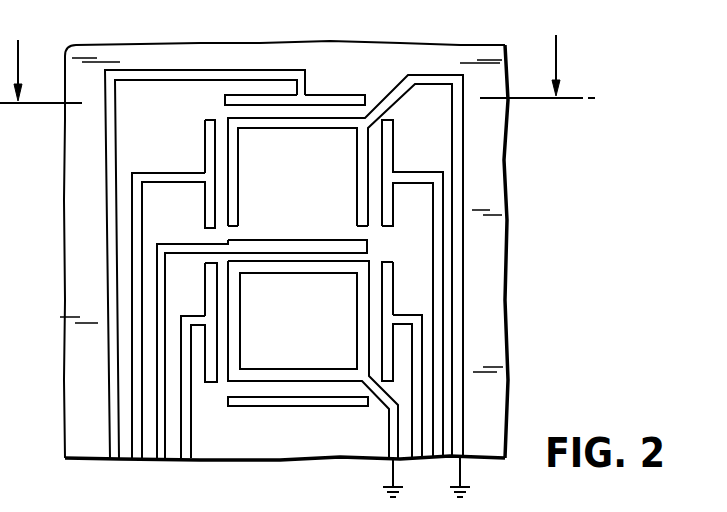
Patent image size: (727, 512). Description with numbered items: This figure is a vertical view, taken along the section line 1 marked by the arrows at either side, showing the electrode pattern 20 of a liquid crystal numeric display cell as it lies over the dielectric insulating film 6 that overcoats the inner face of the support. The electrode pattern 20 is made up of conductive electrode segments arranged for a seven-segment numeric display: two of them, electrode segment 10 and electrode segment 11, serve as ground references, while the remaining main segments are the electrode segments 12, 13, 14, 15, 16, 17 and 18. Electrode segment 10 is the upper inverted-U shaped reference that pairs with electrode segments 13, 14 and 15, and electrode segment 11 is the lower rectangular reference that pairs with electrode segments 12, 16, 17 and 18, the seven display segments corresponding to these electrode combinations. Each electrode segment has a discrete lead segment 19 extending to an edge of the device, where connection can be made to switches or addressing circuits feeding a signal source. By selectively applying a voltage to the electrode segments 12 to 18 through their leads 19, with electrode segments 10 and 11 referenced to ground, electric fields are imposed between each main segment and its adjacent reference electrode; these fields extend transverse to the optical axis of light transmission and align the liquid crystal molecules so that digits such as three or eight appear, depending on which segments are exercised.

The section line 1- 1 is at (297, 85).
The dielectric insulating film 6 is at (183, 55).
The electrode pattern 20 is at (328, 70).
The lead segment 19 is at (112, 235).
The electrode segment 14 is at (335, 97).
The ground reference electrode segment 10 is at (236, 192).
The ground reference electrode segment 11 is at (330, 271).
The electrode segment 12 is at (324, 243).
The electrode segment 13 is at (391, 142).
The electrode segment 15 is at (207, 135).
The electrode segment 16 is at (209, 281).
The electrode segment 17 is at (263, 402).
The electrode segment 18 is at (393, 285).